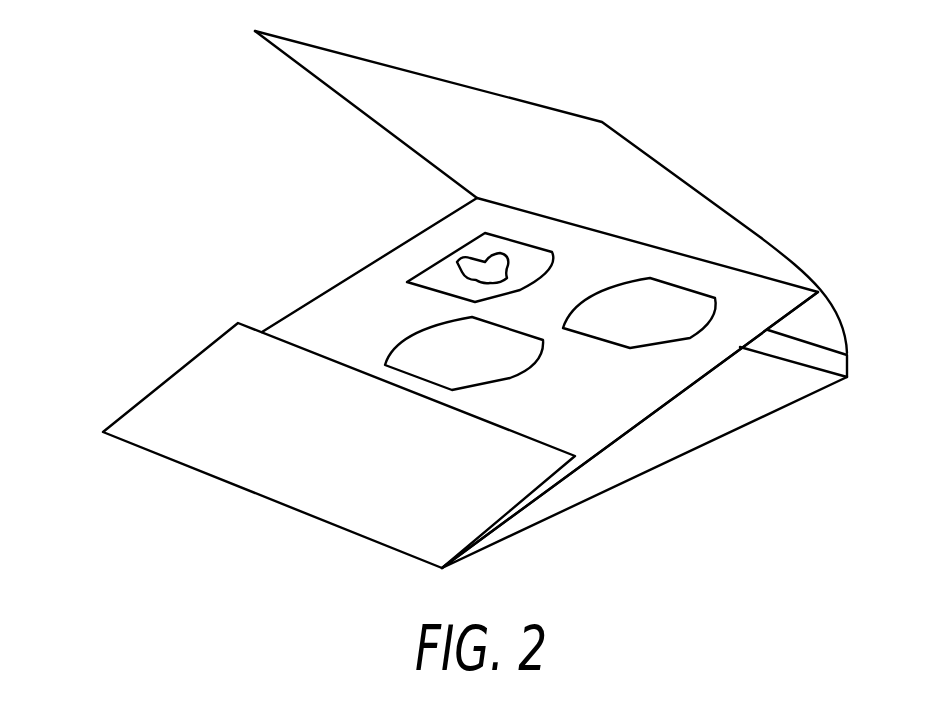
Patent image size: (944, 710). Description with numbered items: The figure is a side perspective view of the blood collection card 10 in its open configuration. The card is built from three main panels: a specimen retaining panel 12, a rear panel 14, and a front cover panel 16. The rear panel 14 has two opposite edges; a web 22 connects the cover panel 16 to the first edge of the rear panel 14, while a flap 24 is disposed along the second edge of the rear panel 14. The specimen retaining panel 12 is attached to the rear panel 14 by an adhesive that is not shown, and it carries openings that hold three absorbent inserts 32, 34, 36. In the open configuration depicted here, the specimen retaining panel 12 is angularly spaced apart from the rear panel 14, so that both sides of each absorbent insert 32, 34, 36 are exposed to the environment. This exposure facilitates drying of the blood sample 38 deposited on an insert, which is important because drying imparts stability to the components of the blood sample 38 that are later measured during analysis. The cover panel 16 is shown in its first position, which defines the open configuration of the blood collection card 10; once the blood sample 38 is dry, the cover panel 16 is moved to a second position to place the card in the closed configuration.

The blood collection card 10 is at (108, 90).
The specimen retaining panel 12 is at (327, 312).
The rear panel 14 is at (670, 442).
The front cover panel 16 is at (671, 208).
The web 22 is at (829, 357).
The flap 24 is at (287, 473).
The absorbent insert 32 is at (424, 272).
The absorbent insert 34 is at (673, 323).
The absorbent insert 36 is at (487, 363).
The blood sample 38 is at (477, 263).